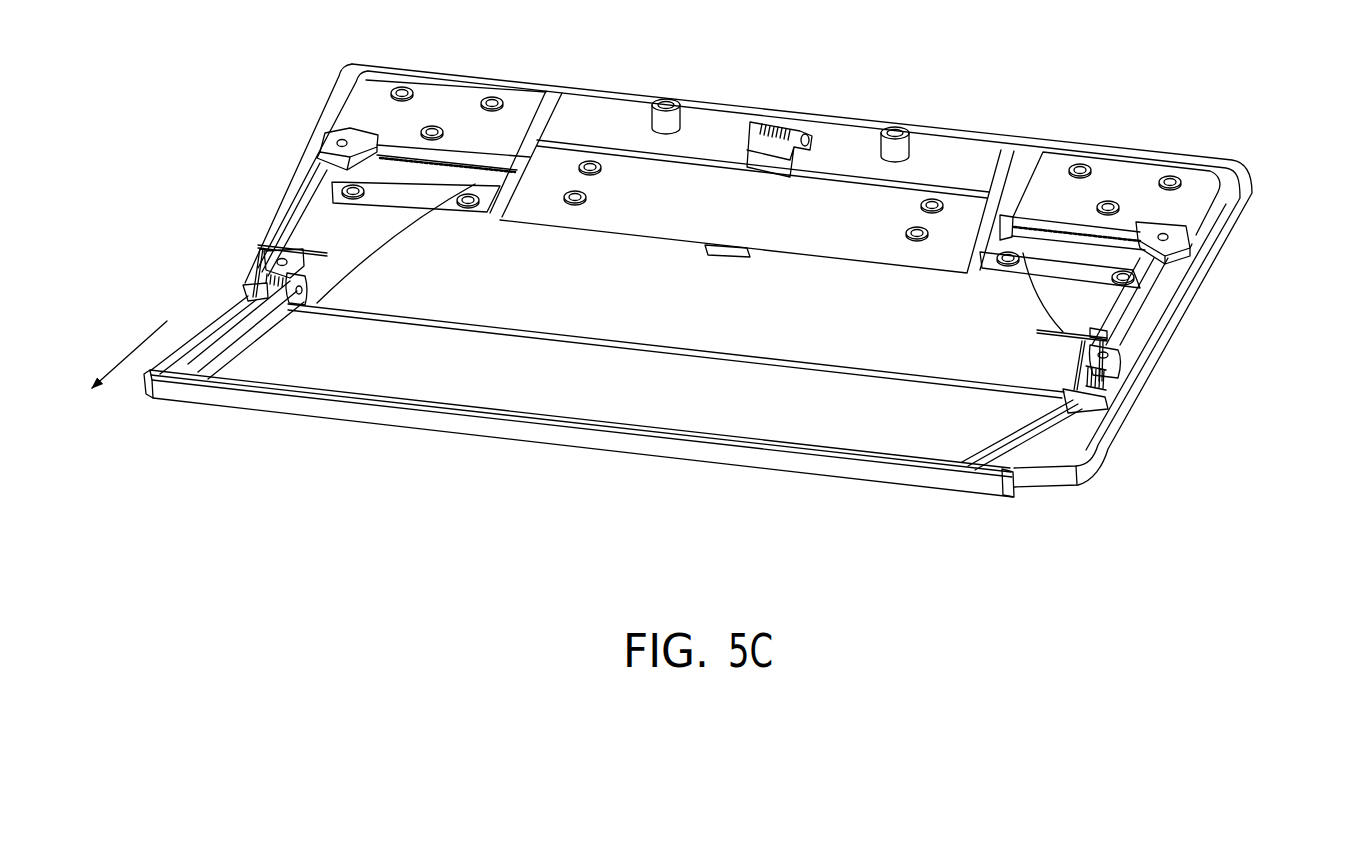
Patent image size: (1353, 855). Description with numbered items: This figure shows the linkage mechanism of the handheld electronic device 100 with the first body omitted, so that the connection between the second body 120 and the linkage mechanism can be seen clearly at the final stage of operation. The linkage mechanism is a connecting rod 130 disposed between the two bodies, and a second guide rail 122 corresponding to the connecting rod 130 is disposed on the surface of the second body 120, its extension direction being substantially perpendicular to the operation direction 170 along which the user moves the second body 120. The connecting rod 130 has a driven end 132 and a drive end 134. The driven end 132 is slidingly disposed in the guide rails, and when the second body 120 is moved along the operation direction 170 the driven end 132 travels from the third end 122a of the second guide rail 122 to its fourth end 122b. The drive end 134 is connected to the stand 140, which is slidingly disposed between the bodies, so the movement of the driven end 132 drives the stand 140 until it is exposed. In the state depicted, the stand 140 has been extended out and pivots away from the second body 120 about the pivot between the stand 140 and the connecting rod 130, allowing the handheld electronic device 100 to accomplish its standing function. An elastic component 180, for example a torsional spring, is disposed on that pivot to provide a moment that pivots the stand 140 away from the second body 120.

The handheld electronic device 100 is at (708, 327).
The second body 120 is at (1118, 445).
The second guide rail 122 is at (1080, 222).
The third end 122a is at (1002, 222).
The fourth end 122b is at (1189, 252).
The connecting rod 130 is at (1150, 278).
The driven end 132 is at (1180, 230).
The drive end 134 is at (1113, 358).
The stand 140 is at (903, 477).
The operation direction 170 is at (133, 352).
The elastic component 180 is at (1107, 380).